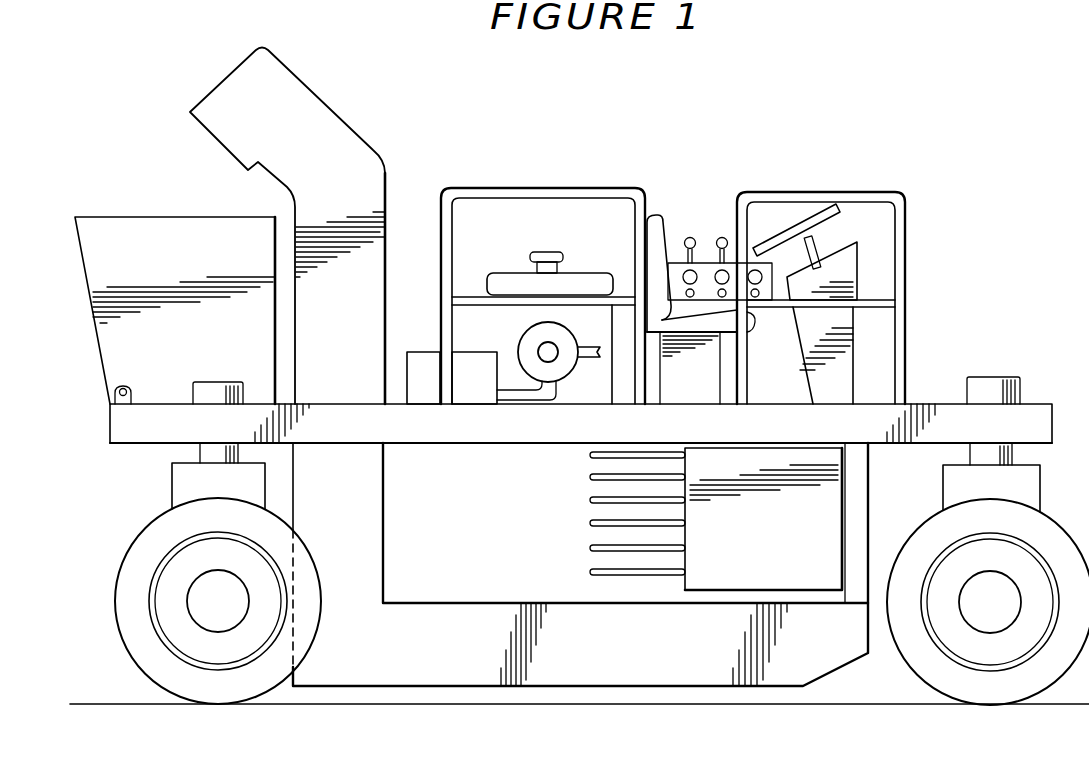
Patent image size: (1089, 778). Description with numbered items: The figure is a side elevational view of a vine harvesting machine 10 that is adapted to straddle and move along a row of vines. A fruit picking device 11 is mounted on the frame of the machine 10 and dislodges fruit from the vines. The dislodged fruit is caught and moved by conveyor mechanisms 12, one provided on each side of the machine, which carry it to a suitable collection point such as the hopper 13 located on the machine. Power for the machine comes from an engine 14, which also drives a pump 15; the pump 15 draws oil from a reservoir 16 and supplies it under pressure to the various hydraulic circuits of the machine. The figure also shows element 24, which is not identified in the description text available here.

The mobile apparatus (vehicle) 10 is at (1012, 313).
The heating unit / burner housing 11 is at (770, 537).
The body / kettle housing 12 is at (495, 603).
The hopper 13 is at (122, 217).
The fuel tank 14 is at (508, 272).
The engine 15 is at (520, 343).
The battery box 16 is at (430, 352).
The heating tubes / burner tubes 24 is at (627, 497).